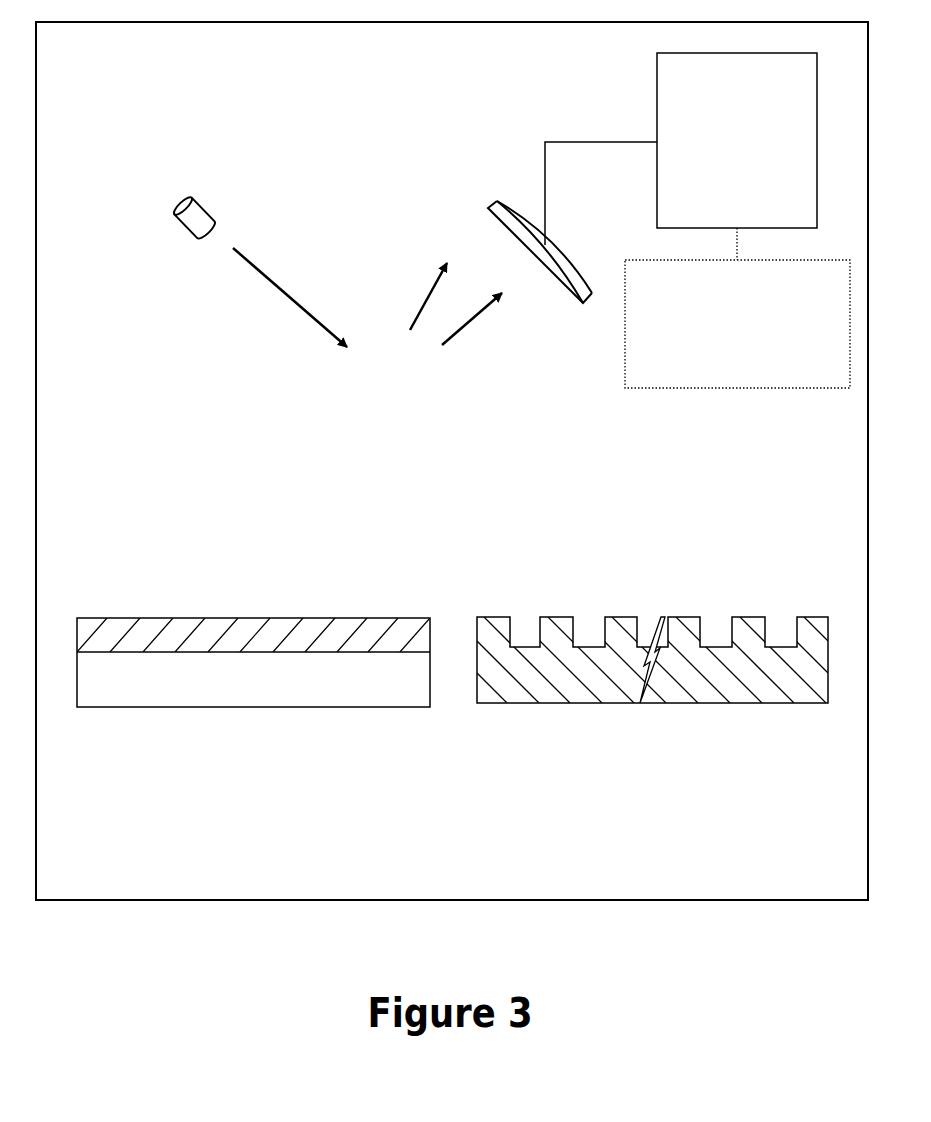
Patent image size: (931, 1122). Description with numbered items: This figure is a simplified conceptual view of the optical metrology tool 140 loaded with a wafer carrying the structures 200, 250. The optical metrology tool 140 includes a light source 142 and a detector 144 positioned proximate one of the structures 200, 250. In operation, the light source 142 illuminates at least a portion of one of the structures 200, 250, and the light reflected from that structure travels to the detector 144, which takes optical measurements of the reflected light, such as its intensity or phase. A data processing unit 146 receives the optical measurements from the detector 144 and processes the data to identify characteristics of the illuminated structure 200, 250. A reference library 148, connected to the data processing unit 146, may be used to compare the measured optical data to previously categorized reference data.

The optical metrology tool 140 is at (822, 855).
The light source 142 is at (200, 220).
The detector 144 is at (493, 200).
The data processing unit 146 is at (717, 196).
The reference library 148 is at (717, 366).
The structure 200 is at (157, 580).
The structure 250 is at (637, 580).